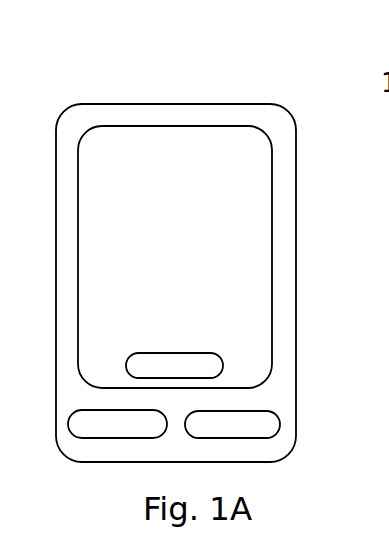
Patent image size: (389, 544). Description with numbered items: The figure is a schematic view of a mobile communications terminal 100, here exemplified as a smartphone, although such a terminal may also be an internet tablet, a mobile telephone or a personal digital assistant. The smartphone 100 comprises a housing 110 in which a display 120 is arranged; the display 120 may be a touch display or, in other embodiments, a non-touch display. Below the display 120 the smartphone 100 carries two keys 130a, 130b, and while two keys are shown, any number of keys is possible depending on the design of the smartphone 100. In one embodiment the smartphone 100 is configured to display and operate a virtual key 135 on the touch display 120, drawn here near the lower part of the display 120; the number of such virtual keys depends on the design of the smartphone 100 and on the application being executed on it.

The mobile communications terminal 100 is at (74, 95).
The housing 110 is at (297, 202).
The display 120 is at (272, 258).
The virtual key 135 is at (223, 365).
The key 130a is at (73, 438).
The key 130b is at (280, 426).